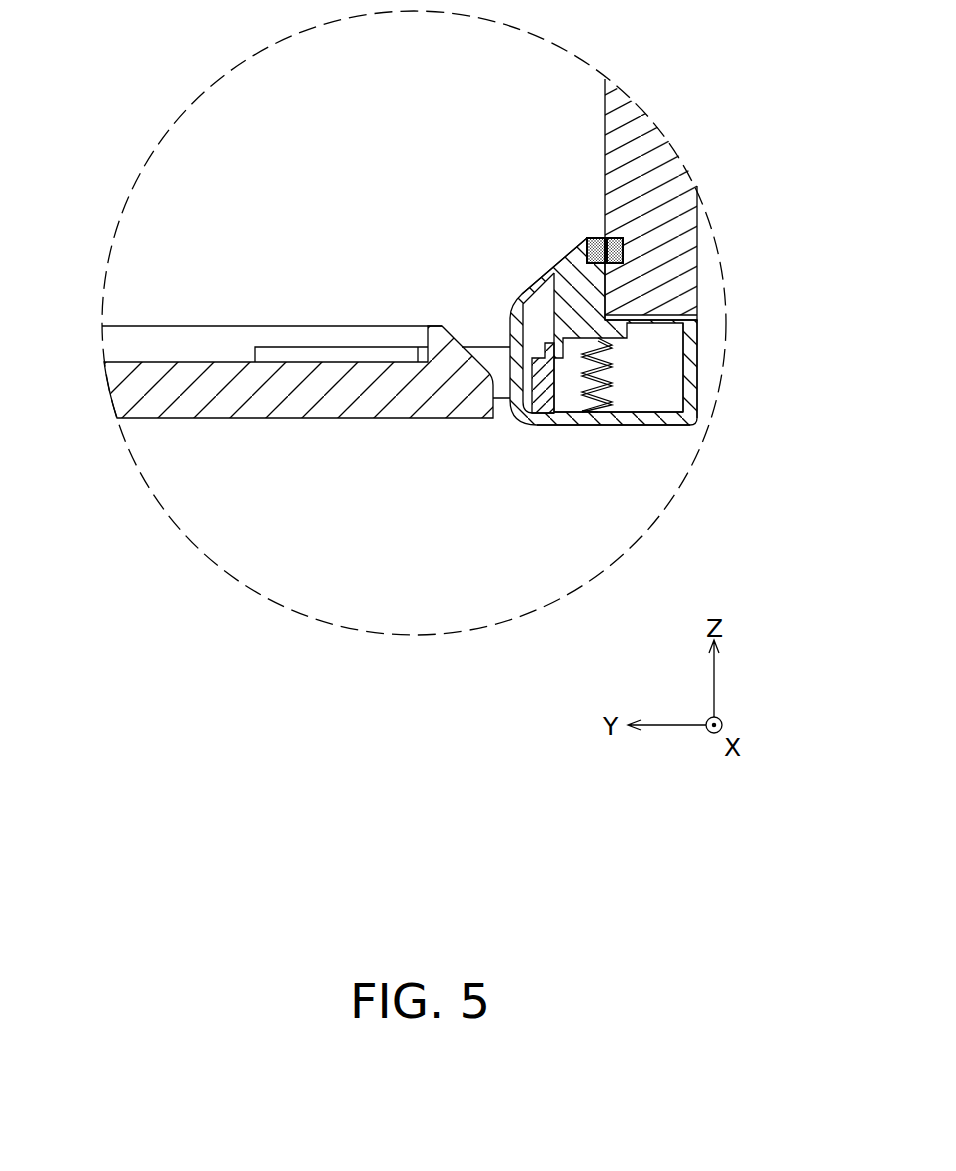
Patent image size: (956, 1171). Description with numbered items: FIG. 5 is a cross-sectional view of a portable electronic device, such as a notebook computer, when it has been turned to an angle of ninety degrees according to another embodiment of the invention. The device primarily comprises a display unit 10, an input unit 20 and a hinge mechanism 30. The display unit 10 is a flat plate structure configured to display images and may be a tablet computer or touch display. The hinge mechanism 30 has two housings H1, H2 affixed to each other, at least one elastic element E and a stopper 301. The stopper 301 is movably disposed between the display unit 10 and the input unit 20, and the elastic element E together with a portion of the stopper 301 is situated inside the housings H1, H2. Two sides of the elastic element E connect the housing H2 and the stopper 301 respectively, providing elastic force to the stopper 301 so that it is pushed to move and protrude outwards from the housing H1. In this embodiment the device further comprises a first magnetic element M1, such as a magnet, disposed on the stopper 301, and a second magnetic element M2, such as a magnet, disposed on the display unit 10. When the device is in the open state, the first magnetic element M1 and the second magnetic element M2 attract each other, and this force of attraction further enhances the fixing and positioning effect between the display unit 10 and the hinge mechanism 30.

The display unit 10 is at (612, 161).
The input unit 20 is at (268, 418).
The hinge mechanism 30 is at (720, 338).
The stopper 301 is at (559, 258).
The first magnetic element M1 is at (591, 237).
The second magnetic element M2 is at (620, 239).
The housing H1 is at (697, 370).
The housing H2 is at (589, 420).
The elastic element E is at (612, 383).